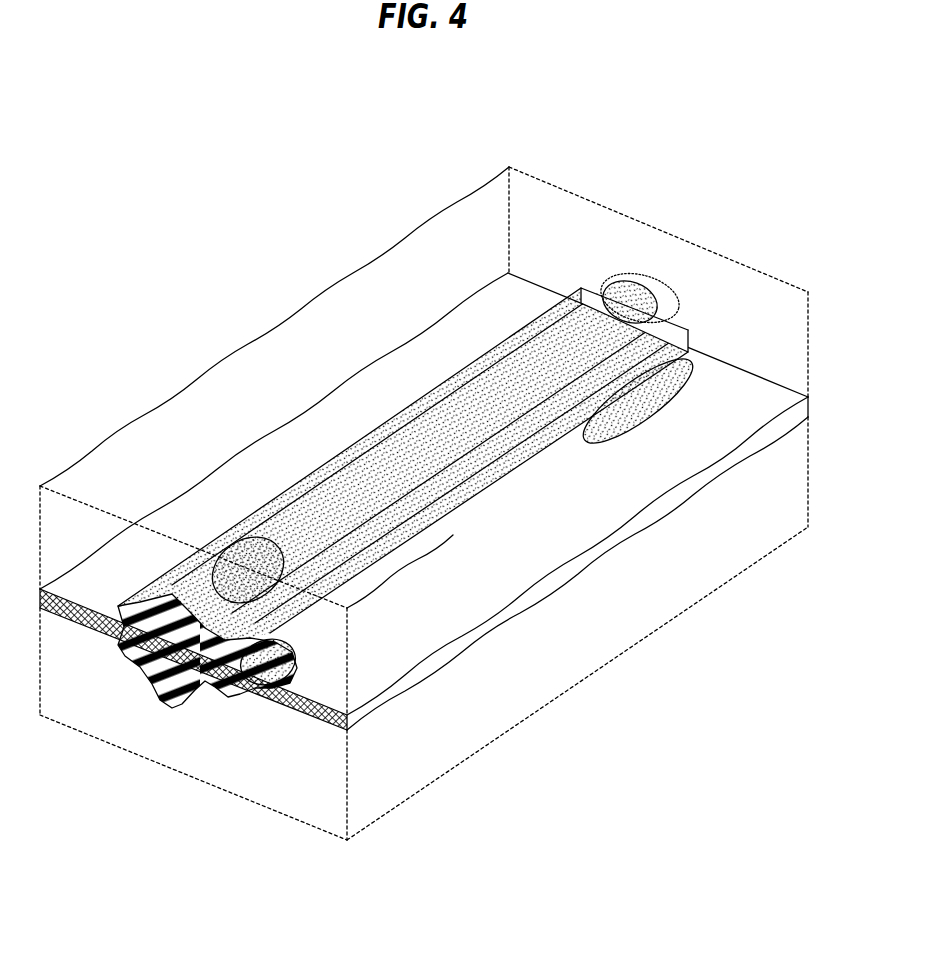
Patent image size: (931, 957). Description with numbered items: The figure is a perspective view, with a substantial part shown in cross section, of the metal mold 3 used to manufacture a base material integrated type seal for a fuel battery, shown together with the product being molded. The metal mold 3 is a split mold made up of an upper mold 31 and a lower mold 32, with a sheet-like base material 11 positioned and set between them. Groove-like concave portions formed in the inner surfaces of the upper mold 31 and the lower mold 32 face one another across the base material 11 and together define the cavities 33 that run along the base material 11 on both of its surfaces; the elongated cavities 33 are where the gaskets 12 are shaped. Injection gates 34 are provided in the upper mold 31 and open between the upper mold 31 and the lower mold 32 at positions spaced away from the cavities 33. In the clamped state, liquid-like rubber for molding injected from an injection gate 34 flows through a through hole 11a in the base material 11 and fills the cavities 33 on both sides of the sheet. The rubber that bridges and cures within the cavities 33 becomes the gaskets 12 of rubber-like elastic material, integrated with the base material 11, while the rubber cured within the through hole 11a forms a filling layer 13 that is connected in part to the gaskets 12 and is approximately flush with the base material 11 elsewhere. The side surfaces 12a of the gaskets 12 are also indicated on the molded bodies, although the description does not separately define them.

The metal mold 3 is at (241, 343).
The upper mold 31 is at (333, 304).
The lower mold 32 is at (491, 726).
The base material 11 is at (541, 533).
The through hole 11a is at (685, 395).
The gasket 12 is at (389, 546).
The cavity 33 is at (231, 574).
The core side face 12a is at (490, 486).
The filling layer 13 is at (627, 416).
The injection gate 34 is at (652, 279).